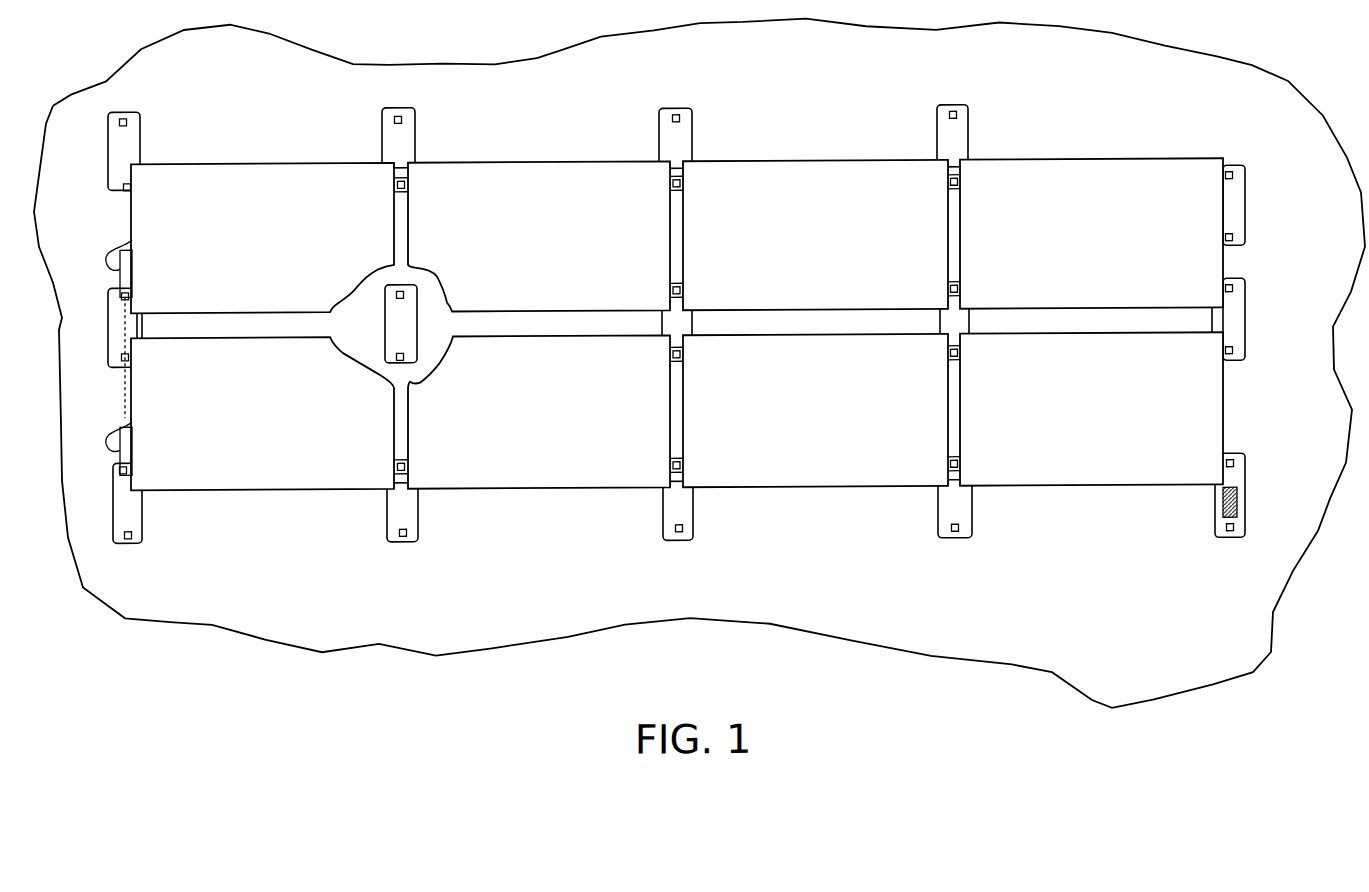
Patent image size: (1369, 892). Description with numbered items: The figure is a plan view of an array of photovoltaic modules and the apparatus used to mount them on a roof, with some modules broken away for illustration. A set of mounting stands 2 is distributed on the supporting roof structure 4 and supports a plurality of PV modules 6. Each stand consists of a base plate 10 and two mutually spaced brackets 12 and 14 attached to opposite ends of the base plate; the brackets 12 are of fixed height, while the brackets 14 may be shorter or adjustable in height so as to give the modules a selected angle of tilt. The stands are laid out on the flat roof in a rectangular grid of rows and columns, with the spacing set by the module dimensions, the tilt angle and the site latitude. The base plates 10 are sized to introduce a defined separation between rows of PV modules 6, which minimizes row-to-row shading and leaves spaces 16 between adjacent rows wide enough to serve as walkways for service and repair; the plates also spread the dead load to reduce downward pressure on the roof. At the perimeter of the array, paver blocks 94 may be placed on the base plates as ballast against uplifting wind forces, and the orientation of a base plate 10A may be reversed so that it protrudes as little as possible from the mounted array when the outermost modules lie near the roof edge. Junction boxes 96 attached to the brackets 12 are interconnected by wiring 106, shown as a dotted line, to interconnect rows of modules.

The mounting stand 2 is at (147, 133).
The supporting roof structure 4 is at (797, 639).
The PV module 6 is at (332, 164).
The base plate 10 is at (405, 157).
The base plate 10A is at (1235, 219).
The bracket 12 is at (130, 119).
The bracket 14 is at (683, 180).
The space 16 is at (605, 336).
The paver block 94 is at (1223, 507).
The junction box 96 is at (132, 241).
The wiring 106 is at (133, 381).